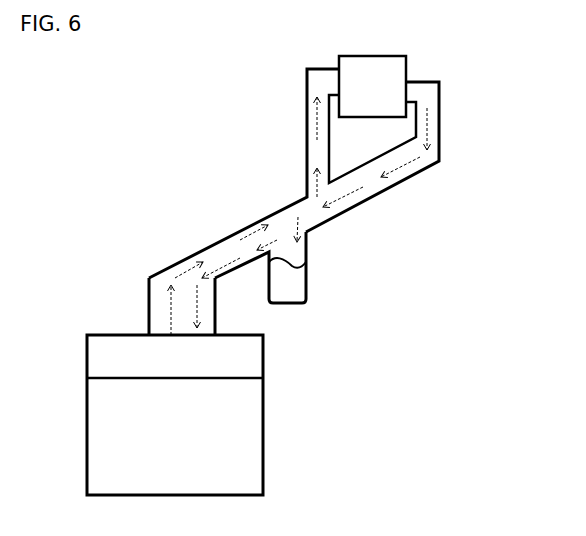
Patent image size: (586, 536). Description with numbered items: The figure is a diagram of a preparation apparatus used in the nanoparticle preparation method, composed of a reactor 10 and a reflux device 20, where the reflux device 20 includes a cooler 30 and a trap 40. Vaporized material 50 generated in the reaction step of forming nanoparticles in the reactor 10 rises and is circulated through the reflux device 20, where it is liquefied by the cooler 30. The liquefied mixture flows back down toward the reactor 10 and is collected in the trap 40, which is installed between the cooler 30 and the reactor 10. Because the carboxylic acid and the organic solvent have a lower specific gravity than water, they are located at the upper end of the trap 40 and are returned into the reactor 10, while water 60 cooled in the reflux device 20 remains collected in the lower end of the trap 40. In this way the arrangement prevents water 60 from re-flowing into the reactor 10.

The reactor 10 is at (263, 433).
The reflux device 20 is at (486, 83).
The cooler 30 is at (338, 80).
The trap 40 is at (307, 248).
The vaporized material 50 is at (158, 312).
The water 60 is at (292, 287).